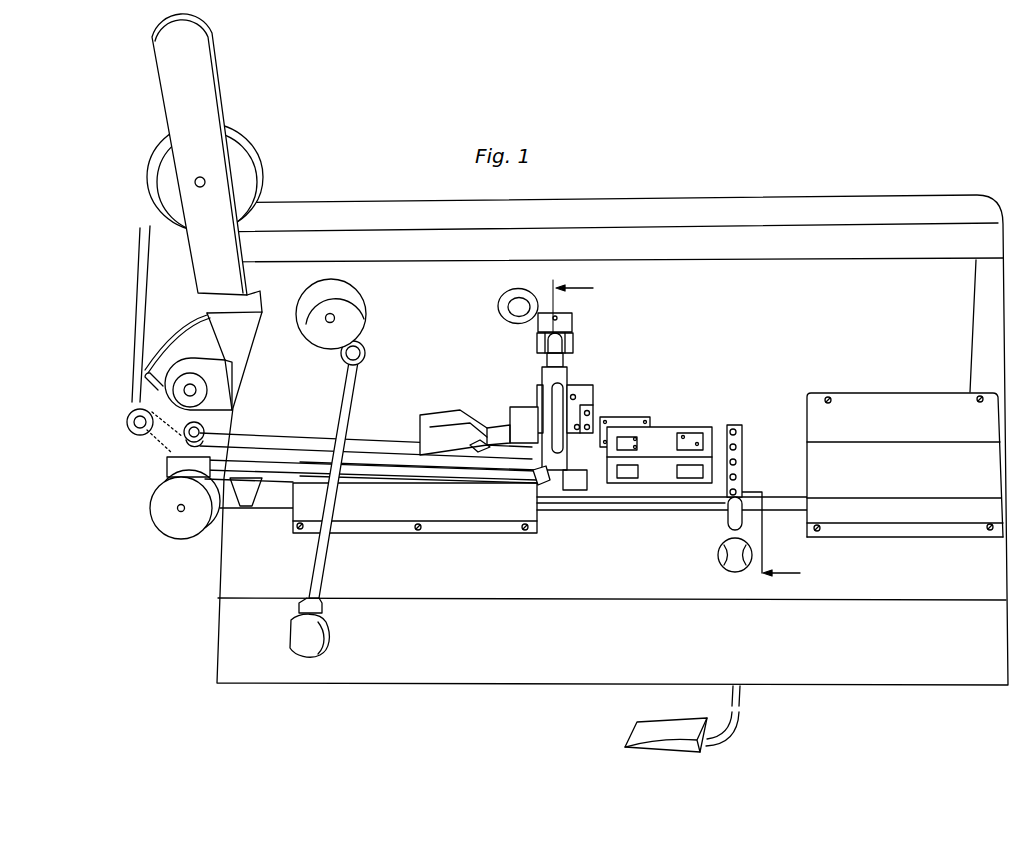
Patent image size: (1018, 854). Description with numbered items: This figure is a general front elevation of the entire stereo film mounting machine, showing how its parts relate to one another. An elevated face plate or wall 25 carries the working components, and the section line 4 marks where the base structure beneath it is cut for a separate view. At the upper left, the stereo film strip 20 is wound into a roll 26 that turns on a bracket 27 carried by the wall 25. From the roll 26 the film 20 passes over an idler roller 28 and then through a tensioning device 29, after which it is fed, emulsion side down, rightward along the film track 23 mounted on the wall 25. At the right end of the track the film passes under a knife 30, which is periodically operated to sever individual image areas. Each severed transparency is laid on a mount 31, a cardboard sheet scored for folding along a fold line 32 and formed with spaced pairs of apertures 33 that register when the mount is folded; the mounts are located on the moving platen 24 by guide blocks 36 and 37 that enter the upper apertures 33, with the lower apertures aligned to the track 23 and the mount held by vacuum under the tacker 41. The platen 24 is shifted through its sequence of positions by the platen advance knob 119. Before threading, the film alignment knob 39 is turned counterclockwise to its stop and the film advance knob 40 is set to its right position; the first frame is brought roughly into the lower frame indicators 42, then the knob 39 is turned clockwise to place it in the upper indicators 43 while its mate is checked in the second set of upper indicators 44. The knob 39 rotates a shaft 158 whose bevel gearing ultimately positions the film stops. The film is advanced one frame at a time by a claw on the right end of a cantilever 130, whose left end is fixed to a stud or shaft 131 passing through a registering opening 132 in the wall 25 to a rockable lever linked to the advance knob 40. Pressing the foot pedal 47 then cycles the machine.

The section line 4- 4 is at (684, 432).
The stereo film strip 20 is at (150, 441).
The film track 23 is at (268, 437).
The platen 24 is at (720, 427).
The face plate or wall 25 is at (788, 329).
The roll 26 is at (229, 126).
The bracket 27 is at (195, 100).
The idler roller 28 is at (127, 424).
The tensioning device 29 is at (162, 468).
The knife 30 is at (545, 488).
The mount 31 is at (663, 430).
The fold line 32 is at (610, 467).
The apertures 33 is at (673, 478).
The guide block 36 is at (640, 437).
The guide block 37 is at (690, 435).
The film alignment knob 39 is at (349, 292).
The film advance knob 40 is at (324, 577).
The tacker 41 is at (569, 373).
The lower frame indicators 42 is at (490, 467).
The upper indicators 43 is at (484, 454).
The second set of upper indicators 44 is at (407, 453).
The foot pedal 47 is at (672, 723).
The platen advance knob 119 is at (717, 562).
The cantilever 130 is at (493, 437).
The stud or shaft 131 is at (455, 420).
The registering opening 132 is at (437, 430).
The shaft 158 is at (326, 318).